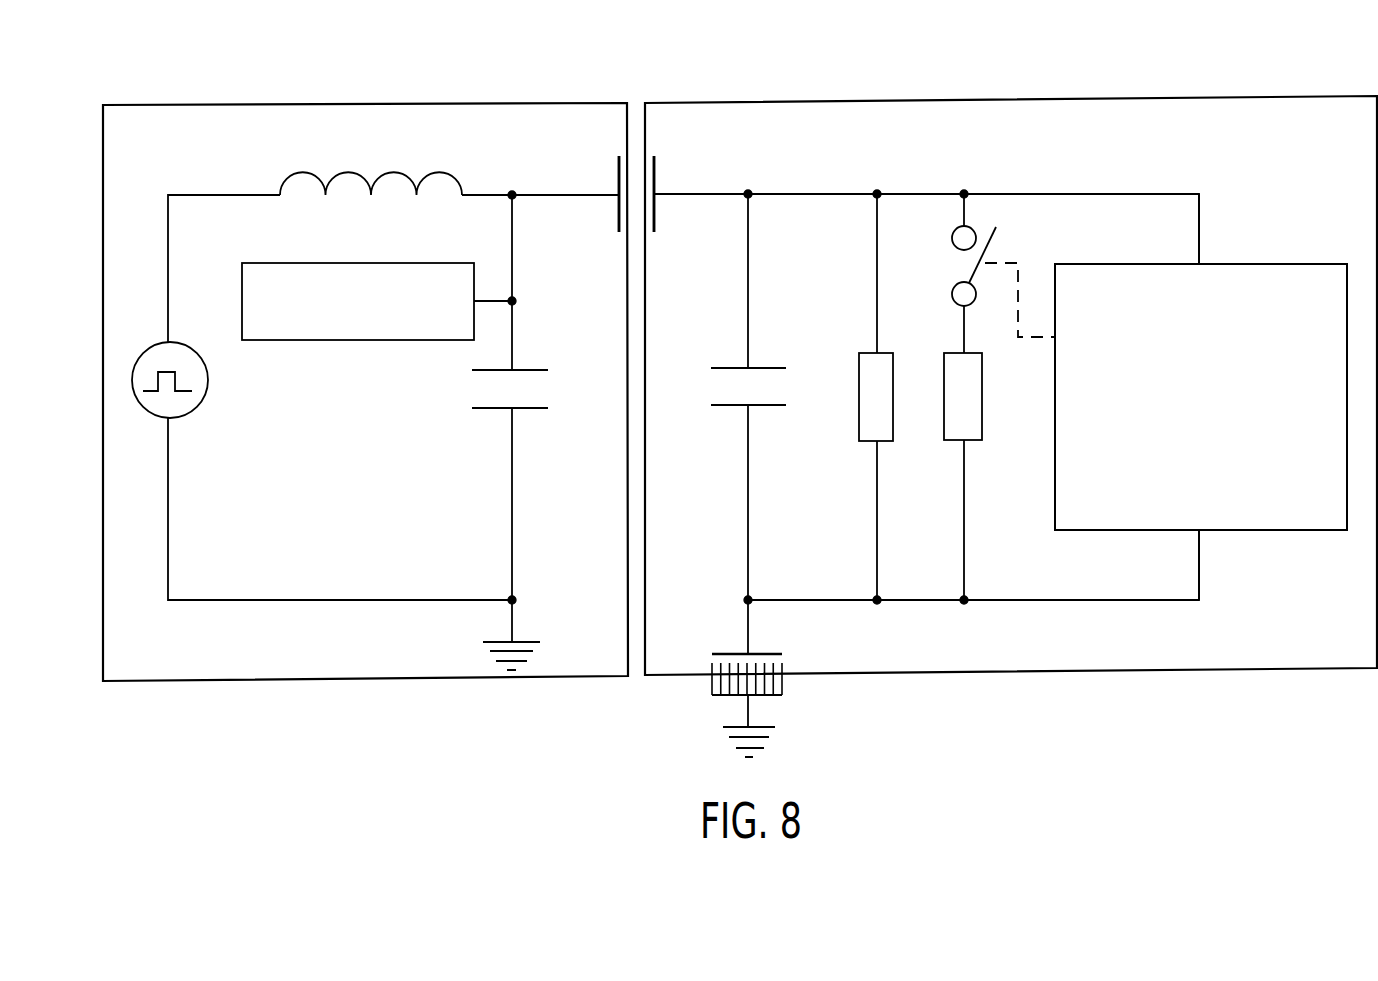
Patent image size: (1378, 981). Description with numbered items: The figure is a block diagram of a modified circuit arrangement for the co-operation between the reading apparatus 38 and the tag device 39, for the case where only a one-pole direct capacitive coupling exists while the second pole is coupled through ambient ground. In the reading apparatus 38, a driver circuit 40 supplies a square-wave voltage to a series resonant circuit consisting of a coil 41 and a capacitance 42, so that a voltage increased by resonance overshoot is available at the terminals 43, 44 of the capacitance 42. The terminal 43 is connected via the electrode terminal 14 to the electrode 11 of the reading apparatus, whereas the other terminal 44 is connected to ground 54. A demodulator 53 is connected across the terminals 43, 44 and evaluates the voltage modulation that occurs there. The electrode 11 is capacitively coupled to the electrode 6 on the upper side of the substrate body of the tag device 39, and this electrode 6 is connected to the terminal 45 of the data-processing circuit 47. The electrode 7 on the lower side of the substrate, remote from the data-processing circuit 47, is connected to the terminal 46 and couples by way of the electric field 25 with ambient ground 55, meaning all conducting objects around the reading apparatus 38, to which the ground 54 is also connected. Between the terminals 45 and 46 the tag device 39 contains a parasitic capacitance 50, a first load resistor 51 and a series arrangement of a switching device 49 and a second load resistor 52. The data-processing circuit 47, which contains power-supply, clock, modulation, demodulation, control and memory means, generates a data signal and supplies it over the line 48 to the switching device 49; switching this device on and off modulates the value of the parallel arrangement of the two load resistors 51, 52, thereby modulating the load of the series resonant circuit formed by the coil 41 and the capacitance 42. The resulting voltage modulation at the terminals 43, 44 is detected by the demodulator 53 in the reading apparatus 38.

The reading apparatus 38 is at (300, 105).
The tag device 39 is at (1045, 98).
The electrode 11 is at (618, 165).
The electrode terminal 14 is at (574, 192).
The electrode 6 is at (652, 173).
The electrode 7 is at (777, 653).
The electric field 25 is at (712, 678).
The driver circuit 40 is at (190, 410).
The coil 41 is at (348, 172).
The capacitance 42 is at (480, 393).
The terminal 43 is at (510, 192).
The terminal 44 is at (514, 598).
The terminal 45 is at (1200, 229).
The terminal 46 is at (1199, 558).
The data-processing circuit 47 is at (1288, 530).
The line 48 is at (1020, 320).
The switching device 49 is at (968, 270).
The parasitic capacitance 50 is at (728, 388).
The first load resistor 51 is at (872, 384).
The second load resistor 52 is at (970, 434).
The demodulator 53 is at (358, 322).
The ground 54 is at (483, 641).
The ambient ground 55 is at (750, 712).